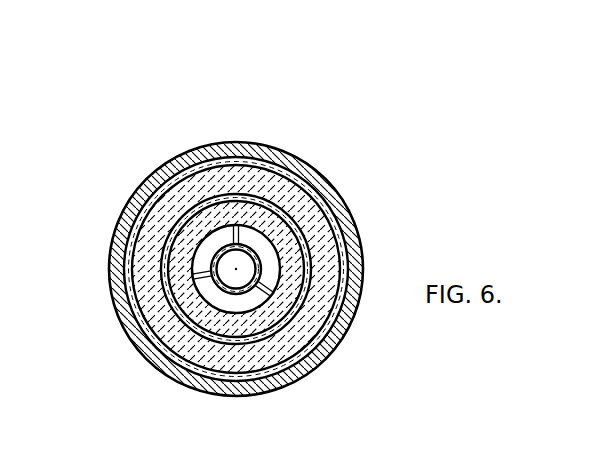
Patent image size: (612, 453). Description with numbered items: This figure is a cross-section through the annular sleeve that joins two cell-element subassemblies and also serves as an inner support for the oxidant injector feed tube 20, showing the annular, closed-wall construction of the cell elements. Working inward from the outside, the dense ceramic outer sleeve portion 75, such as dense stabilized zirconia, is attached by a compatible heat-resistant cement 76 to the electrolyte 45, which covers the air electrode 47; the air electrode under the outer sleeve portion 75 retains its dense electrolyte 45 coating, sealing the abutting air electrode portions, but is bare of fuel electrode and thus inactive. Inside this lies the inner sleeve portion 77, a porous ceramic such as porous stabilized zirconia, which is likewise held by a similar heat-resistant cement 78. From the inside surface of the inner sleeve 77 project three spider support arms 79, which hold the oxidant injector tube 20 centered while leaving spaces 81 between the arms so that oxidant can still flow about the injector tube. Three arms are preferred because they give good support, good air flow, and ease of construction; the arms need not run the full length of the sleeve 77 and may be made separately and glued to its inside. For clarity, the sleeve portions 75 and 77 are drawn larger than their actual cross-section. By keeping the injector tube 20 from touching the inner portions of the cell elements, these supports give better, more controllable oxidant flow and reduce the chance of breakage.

The oxidant injector feed tube 20 is at (138, 305).
The electrolyte 45 is at (318, 202).
The air electrode 47 is at (276, 192).
The outer sleeve portion 75 is at (247, 153).
The cement 76 is at (195, 160).
The inner sleeve portion 77 is at (172, 266).
The cement 78 is at (307, 243).
The spider support arms 79 is at (185, 209).
The spaces 81 is at (170, 350).